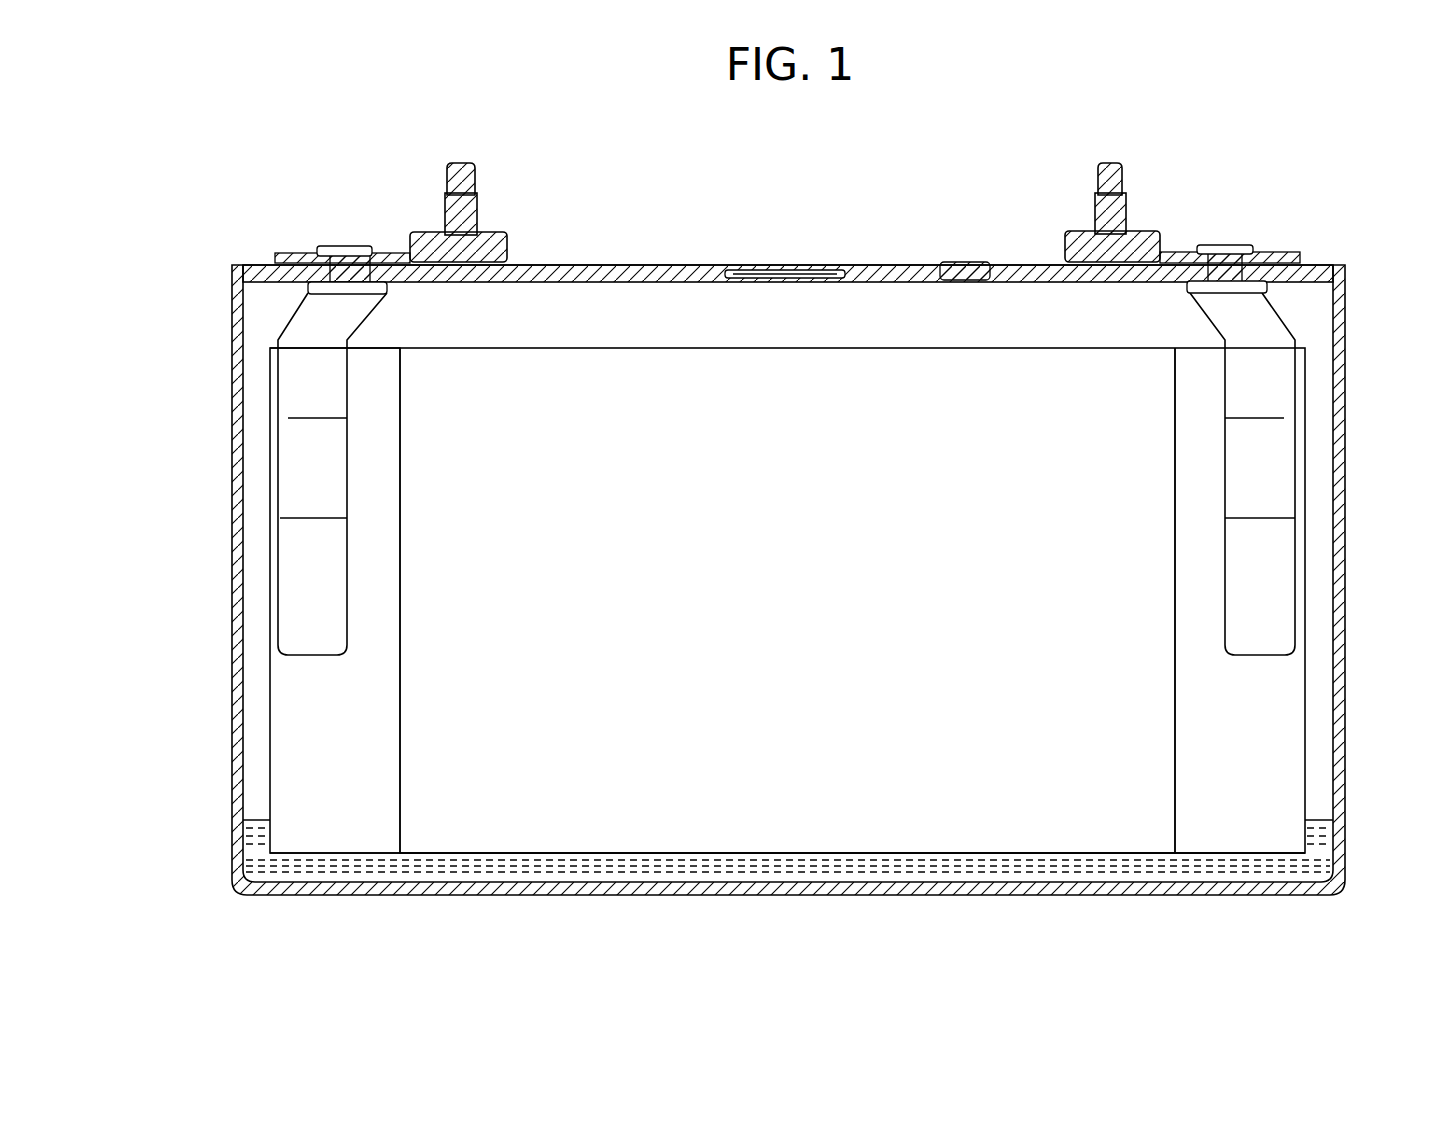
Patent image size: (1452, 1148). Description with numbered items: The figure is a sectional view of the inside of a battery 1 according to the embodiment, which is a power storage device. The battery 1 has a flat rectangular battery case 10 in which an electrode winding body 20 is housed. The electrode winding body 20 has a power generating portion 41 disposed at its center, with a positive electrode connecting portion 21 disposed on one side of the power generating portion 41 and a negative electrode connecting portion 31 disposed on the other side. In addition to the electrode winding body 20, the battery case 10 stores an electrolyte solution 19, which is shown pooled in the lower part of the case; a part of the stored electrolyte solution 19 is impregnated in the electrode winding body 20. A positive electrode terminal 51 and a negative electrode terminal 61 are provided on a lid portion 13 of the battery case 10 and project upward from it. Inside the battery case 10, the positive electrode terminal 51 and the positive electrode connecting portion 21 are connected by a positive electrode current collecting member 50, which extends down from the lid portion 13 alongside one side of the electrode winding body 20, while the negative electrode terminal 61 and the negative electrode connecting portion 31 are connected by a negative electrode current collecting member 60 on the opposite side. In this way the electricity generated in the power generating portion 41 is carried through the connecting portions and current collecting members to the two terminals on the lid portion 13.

The battery 1 is at (903, 151).
The battery case 10 is at (500, 895).
The lid portion 13 is at (643, 272).
The electrolyte solution 19 is at (742, 800).
The electrode winding body 20 is at (1115, 805).
The positive electrode connecting portion 21 is at (292, 698).
The negative electrode connecting portion 31 is at (1283, 698).
The power generating portion 41 is at (892, 805).
The positive electrode current collecting member 50 is at (295, 507).
The positive electrode terminal 51 is at (468, 162).
The negative electrode current collecting member 60 is at (1267, 480).
The negative electrode terminal 61 is at (1110, 162).